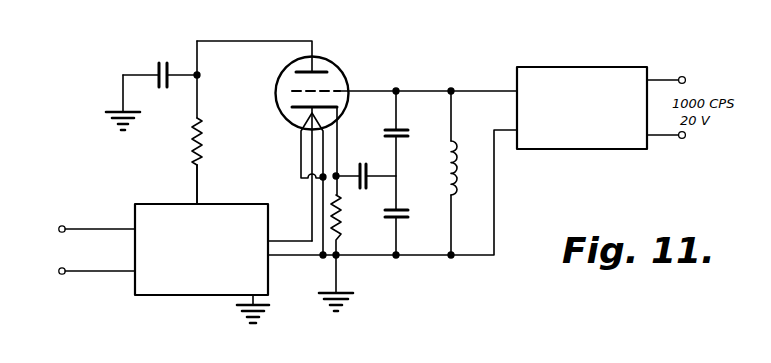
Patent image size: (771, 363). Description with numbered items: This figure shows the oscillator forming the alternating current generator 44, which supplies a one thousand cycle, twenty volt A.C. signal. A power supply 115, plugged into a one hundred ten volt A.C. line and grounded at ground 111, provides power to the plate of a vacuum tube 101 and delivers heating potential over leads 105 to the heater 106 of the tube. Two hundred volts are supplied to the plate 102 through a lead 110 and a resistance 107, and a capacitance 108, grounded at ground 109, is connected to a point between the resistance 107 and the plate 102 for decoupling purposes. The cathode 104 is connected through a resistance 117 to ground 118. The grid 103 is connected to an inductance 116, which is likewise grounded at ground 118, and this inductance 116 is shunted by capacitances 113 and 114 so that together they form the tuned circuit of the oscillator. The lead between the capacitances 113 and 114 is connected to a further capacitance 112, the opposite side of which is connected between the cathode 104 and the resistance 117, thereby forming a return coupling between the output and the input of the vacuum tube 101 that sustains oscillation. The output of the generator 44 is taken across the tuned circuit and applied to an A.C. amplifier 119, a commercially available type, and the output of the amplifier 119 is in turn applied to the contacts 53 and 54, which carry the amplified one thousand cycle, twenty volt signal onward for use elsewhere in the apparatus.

The alternating current generator 44 is at (449, 66).
The contact 53 is at (686, 77).
The contact 54 is at (684, 139).
The vacuum tube 101 is at (333, 60).
The plate 102 is at (303, 77).
The grid 103 is at (330, 88).
The cathode 104 is at (303, 101).
The leads 105 is at (278, 247).
The heater 106 is at (301, 160).
The resistance 107 is at (193, 155).
The capacitance 108 is at (156, 70).
The ground 109 is at (107, 112).
The lead 110 is at (198, 186).
The ground 111 is at (267, 299).
The capacitance 112 is at (375, 162).
The capacitance 113 is at (400, 128).
The capacitance 114 is at (400, 220).
The power supply 115 is at (140, 297).
The inductance 116 is at (447, 165).
The resistance 117 is at (341, 228).
The ground 118 is at (346, 291).
The A.C. amplifier 119 is at (588, 66).